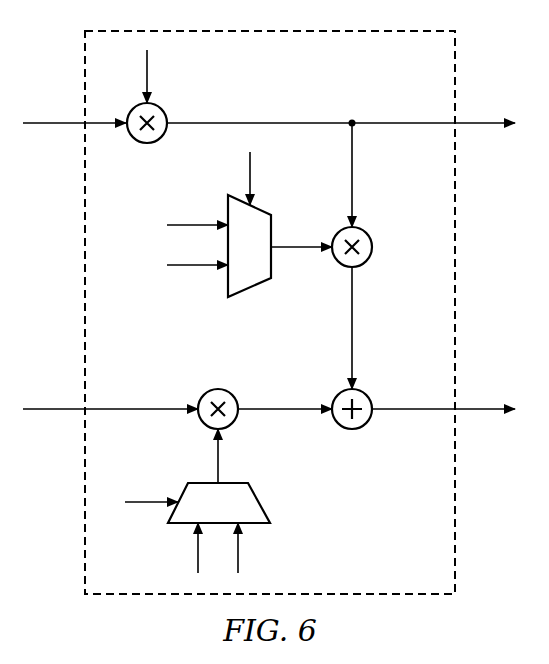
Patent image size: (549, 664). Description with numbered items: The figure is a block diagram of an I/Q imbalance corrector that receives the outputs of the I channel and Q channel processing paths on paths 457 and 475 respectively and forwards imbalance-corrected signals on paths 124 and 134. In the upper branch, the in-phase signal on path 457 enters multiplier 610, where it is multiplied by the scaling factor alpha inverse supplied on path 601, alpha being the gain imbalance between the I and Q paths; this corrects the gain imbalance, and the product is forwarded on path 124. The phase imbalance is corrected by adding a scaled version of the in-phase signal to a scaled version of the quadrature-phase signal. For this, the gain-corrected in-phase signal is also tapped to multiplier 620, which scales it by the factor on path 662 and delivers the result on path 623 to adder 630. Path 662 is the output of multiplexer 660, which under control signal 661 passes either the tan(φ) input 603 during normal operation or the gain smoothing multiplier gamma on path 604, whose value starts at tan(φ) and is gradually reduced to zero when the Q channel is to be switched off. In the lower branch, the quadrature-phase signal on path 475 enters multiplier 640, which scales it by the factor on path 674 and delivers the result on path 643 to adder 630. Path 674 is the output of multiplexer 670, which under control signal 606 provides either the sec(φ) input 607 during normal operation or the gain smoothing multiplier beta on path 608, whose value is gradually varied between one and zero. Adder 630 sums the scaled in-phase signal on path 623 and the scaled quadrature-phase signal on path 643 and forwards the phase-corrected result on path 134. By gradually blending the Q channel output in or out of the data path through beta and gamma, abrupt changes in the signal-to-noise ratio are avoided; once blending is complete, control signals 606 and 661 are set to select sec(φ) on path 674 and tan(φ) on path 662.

The in-phase signal path 457 is at (60, 121).
The imbalance-corrected I output path 124 is at (480, 122).
The scaling factor alpha inverse 601 is at (149, 68).
The multiplier 610 is at (139, 140).
The tan(φ) input 603 is at (200, 223).
The gain smoothing multiplier gamma path 604 is at (200, 268).
The control signal 661 is at (252, 180).
The multiplexer 660 is at (250, 290).
The scaling factor path 662 is at (290, 245).
The multiplier 620 is at (367, 233).
The scaled in-phase signal path 623 is at (354, 323).
The quadrature-phase signal path 475 is at (60, 411).
The multiplier 640 is at (210, 393).
The scaled quadrature-phase signal path 643 is at (280, 407).
The adder 630 is at (356, 429).
The imbalance-corrected Q output path 134 is at (480, 411).
The scaling factor path 674 is at (220, 461).
The multiplexer 670 is at (260, 503).
The control signal 606 is at (152, 500).
The sec(φ) input 607 is at (196, 549).
The gain smoothing multiplier beta path 608 is at (240, 549).